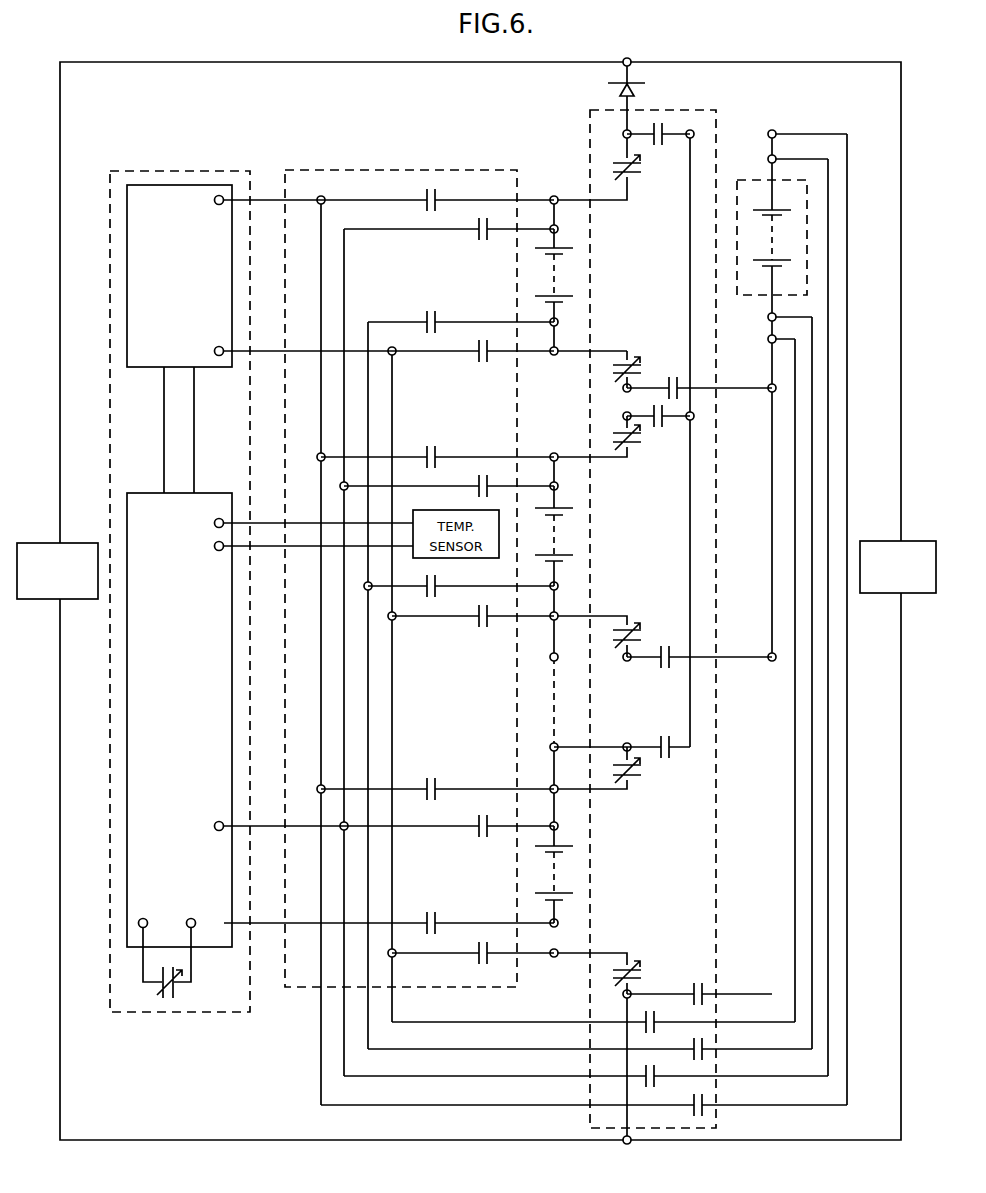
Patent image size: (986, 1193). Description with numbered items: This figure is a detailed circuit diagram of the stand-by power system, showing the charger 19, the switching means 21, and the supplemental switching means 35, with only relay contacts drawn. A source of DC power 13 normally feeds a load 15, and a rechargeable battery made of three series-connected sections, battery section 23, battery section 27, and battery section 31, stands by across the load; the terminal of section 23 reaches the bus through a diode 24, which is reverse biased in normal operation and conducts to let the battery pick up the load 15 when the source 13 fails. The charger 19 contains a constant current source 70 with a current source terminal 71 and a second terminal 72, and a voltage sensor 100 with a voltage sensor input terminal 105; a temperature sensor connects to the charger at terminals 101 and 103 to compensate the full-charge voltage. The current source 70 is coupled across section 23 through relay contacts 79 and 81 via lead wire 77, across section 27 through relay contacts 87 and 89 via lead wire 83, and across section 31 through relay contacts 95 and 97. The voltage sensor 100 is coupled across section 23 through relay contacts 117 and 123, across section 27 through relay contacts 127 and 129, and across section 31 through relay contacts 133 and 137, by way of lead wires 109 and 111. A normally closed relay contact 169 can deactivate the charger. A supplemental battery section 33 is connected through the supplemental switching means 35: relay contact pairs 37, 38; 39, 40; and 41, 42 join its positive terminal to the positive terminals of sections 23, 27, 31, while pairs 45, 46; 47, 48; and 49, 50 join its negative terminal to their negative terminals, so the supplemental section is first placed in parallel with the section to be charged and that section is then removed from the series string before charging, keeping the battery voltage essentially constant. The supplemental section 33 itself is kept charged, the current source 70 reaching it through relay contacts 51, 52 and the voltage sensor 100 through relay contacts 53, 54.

The source of DC power 13 is at (52, 599).
The load 15 is at (930, 593).
The charger 19 is at (184, 171).
The switching means 21 is at (417, 170).
The battery section 23 is at (565, 274).
The diode 24 is at (619, 90).
The battery section 27 is at (567, 532).
The battery section 31 is at (567, 873).
The supplemental battery section 33 is at (746, 180).
The supplemental switching means 35 is at (698, 110).
The relay contact 37 is at (658, 147).
The relay contact 38 is at (615, 170).
The relay contact 39 is at (658, 429).
The relay contact 40 is at (614, 437).
The relay contact 41 is at (665, 735).
The relay contact 42 is at (644, 780).
The relay contact 45 is at (673, 376).
The relay contact 46 is at (614, 358).
The relay contact 47 is at (665, 645).
The relay contact 48 is at (614, 625).
The relay contact 49 is at (697, 982).
The relay contact 50 is at (614, 962).
The relay contact 51 is at (704, 1091).
The relay contact 52 is at (650, 1012).
The relay contact 53 is at (657, 1089).
The relay contact 54 is at (696, 1041).
The constant current source 70 is at (170, 326).
The current source terminal 71 is at (214, 200).
The current source output terminal 72 is at (214, 351).
The lead wire 77 is at (302, 350).
The relay contact 79 is at (434, 192).
The relay contact 81 is at (483, 364).
The lead wire 83 is at (325, 456).
The relay contact 87 is at (430, 445).
The relay contact 89 is at (483, 629).
The relay contact 95 is at (430, 778).
The relay contact 97 is at (486, 946).
The voltage sensor 100 is at (166, 790).
The terminal 101 is at (214, 523).
The terminal 103 is at (214, 546).
The voltage sensor input terminal 105 is at (214, 826).
The lead wire 109 is at (423, 828).
The lead wire 111 is at (266, 925).
The relay contact 117 is at (483, 242).
The relay contact 123 is at (430, 310).
The relay contact 127 is at (486, 475).
The relay contact 129 is at (436, 578).
The relay contact 133 is at (486, 814).
The relay contact 137 is at (431, 911).
The normally closed relay contact 169 is at (171, 1001).